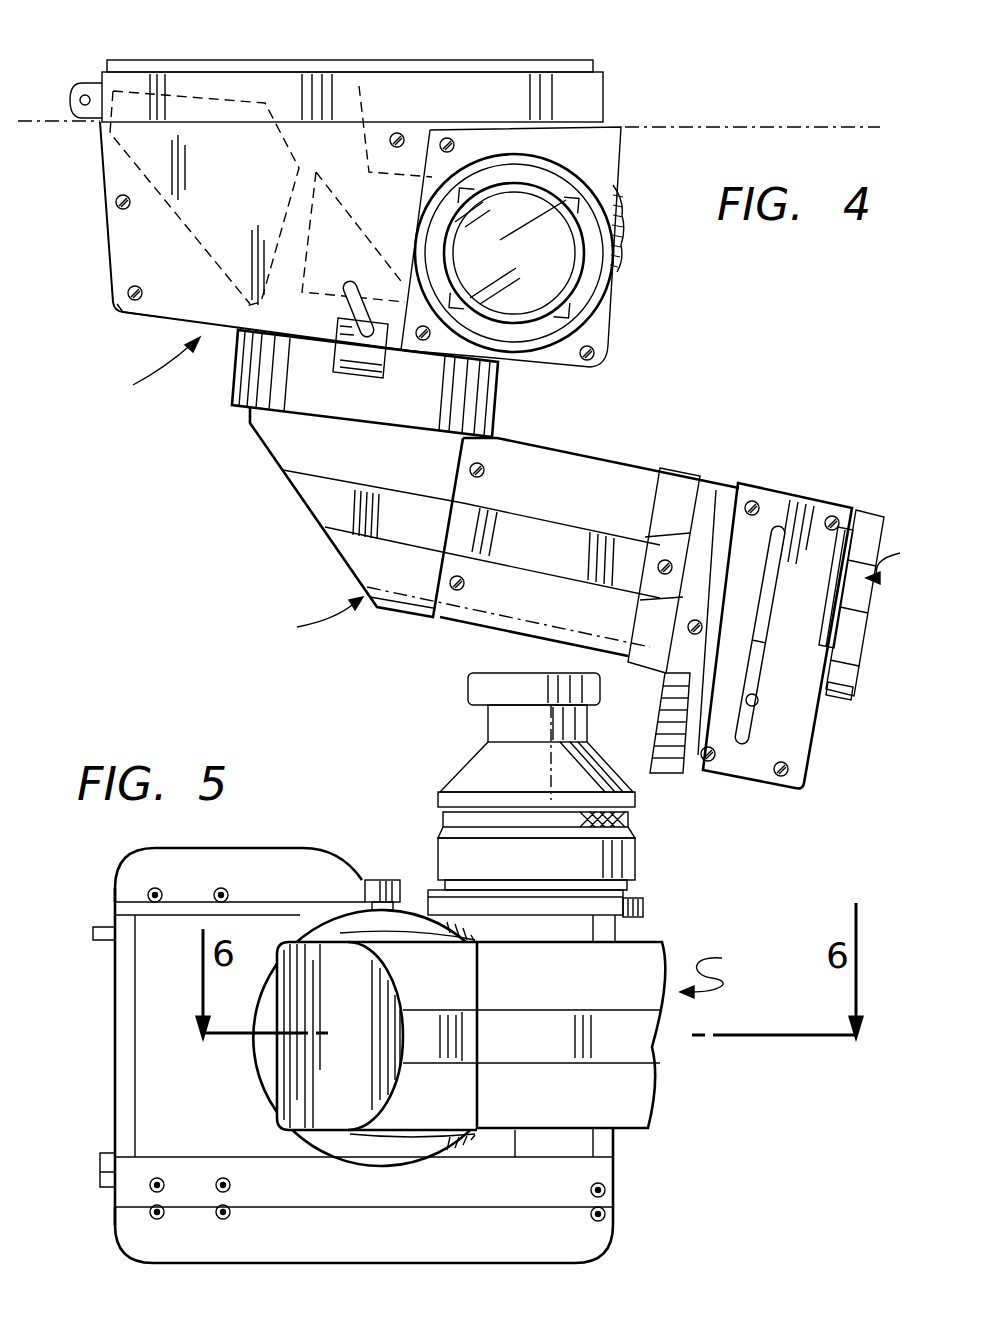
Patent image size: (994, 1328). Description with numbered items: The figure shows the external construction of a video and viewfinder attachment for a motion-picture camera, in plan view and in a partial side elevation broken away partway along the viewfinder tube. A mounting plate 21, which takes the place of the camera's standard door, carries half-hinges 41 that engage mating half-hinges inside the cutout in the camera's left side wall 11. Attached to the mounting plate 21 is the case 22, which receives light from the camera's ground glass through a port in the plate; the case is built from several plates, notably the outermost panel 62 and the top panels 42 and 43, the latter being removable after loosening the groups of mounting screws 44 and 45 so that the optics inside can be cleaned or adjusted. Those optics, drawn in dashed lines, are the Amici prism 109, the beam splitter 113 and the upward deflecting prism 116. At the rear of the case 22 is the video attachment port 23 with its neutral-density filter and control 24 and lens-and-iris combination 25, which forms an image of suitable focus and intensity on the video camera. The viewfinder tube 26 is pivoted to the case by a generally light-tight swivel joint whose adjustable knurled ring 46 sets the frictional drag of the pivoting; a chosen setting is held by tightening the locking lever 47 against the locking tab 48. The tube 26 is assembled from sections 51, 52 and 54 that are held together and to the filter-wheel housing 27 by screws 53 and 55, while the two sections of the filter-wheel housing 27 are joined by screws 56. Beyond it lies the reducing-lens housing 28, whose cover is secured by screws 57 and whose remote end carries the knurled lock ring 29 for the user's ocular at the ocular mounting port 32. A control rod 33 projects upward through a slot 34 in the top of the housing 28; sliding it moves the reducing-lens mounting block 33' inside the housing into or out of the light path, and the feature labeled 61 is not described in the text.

In FIG. 4, the left side wall 11 is at (30, 126).
In FIG. 4, the mounting plate 21 is at (588, 100).
In FIG. 5, the mounting plate 21 is at (235, 862).
In FIG. 4, the case 22 is at (145, 367).
In FIG. 5, the video attachment port 23 is at (472, 671).
In FIG. 4, the neutral-density filter and control 24 is at (626, 222).
In FIG. 5, the neutral-density filter and control 24 is at (645, 900).
In FIG. 4, the lens-and-iris combination 25 is at (593, 273).
In FIG. 5, the lens-and-iris combination 25 is at (470, 862).
In FIG. 4, the viewfinder tube 26 is at (447, 617).
In FIG. 5, the viewfinder tube 26 is at (715, 973).
In FIG. 4, the filter-wheel housing 27 is at (672, 765).
In FIG. 4, the reducing-lens housing 28 is at (765, 790).
In FIG. 4, the knurled lock ring 29 is at (862, 510).
In FIG. 4, the ocular mounting port 32 is at (872, 613).
In FIG. 4, the control rod 33 is at (749, 678).
In FIG. 4, the reducing-lens mounting block 33' is at (828, 654).
In FIG. 4, the slot 34 is at (758, 702).
In FIG. 4, the half-hinges 41 is at (76, 82).
In FIG. 5, the half-hinges 41 is at (98, 930).
In FIG. 4, the top panel 42 is at (120, 236).
In FIG. 5, the top panel 42 is at (152, 893).
In FIG. 4, the top panel 43 is at (528, 370).
In FIG. 5, the top panel 43 is at (445, 905).
In FIG. 4, the mounting screws 44 is at (397, 133).
In FIG. 4, the mounting screws 45 is at (448, 136).
In FIG. 4, the swivel joint and friction control ring 46 is at (252, 368).
In FIG. 5, the swivel joint and friction control ring 46 is at (330, 950).
In FIG. 4, the locking lever 47 is at (338, 313).
In FIG. 5, the locking lever 47 is at (383, 880).
In FIG. 4, the locking tab 48 is at (379, 366).
In FIG. 5, the locking tab 48 is at (389, 905).
In FIG. 4, the finder tube section 51 is at (332, 541).
In FIG. 5, the finder tube section 51 is at (407, 1112).
In FIG. 4, the finder tube section 52 is at (623, 448).
In FIG. 5, the finder tube section 52 is at (627, 1108).
In FIG. 4, the screws 53 is at (455, 591).
In FIG. 4, the finder tube section 54 is at (685, 470).
In FIG. 4, the screws 55 is at (663, 574).
In FIG. 4, the screws 56 is at (695, 620).
In FIG. 4, the screws 57 is at (788, 769).
In FIG. 5, the groove 61 is at (660, 1072).
In FIG. 4, the outermost panel 62 is at (140, 317).
In FIG. 5, the outermost panel 62 is at (580, 932).
In FIG. 4, the Amici prism 109 is at (212, 90).
In FIG. 4, the beam splitter 113 is at (358, 85).
In FIG. 4, the upward deflecting prism 116 is at (578, 193).